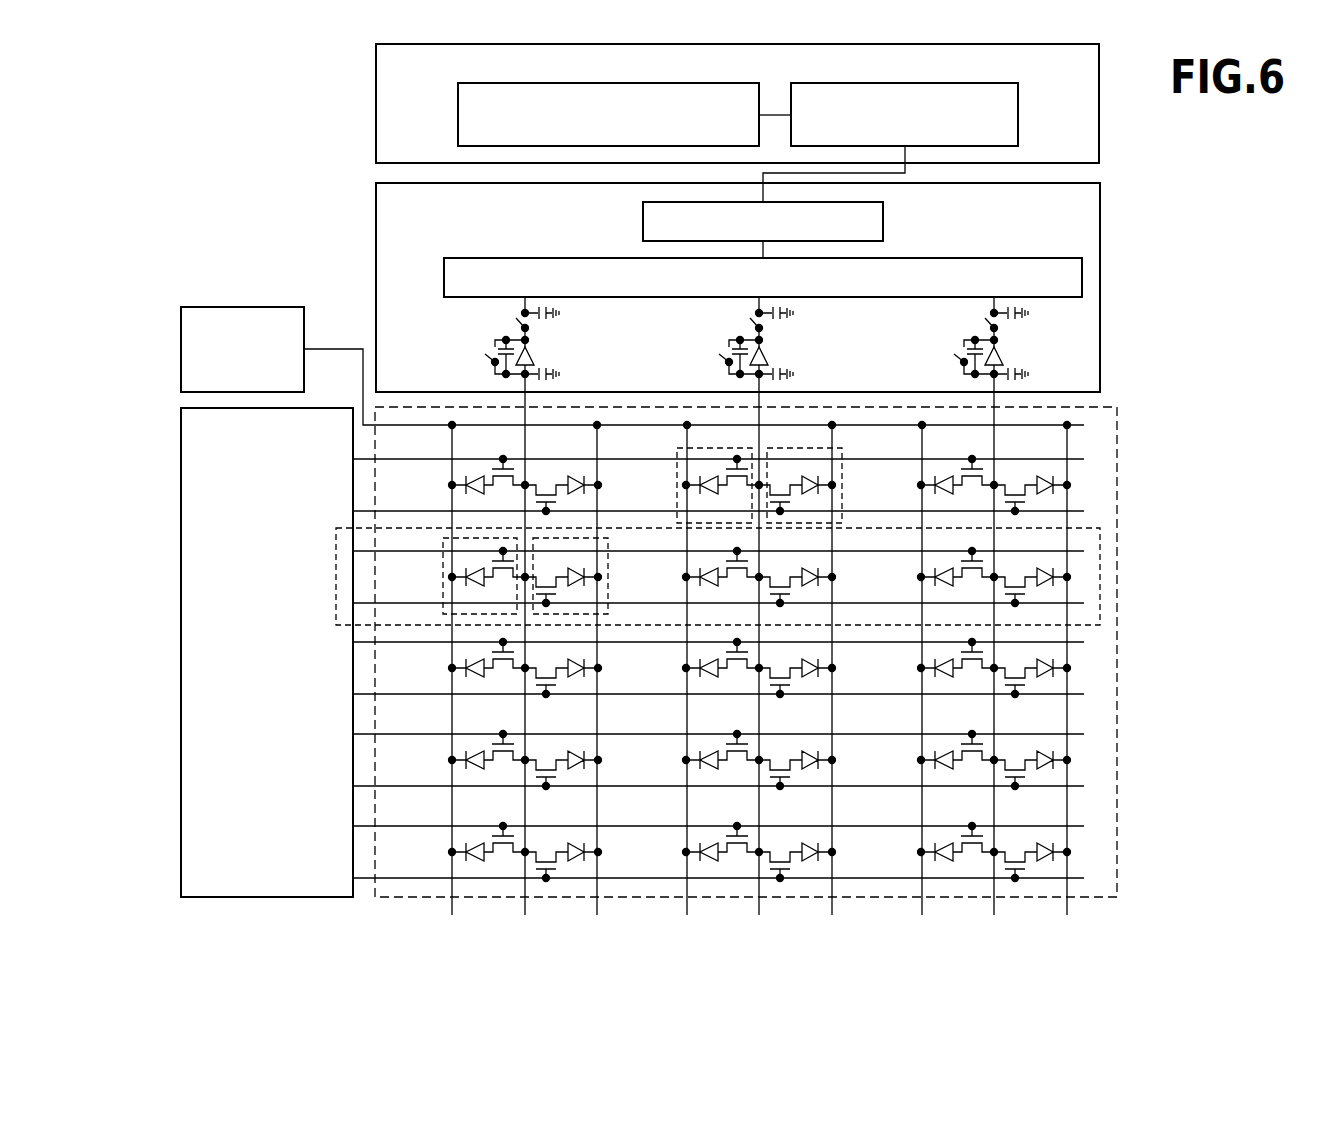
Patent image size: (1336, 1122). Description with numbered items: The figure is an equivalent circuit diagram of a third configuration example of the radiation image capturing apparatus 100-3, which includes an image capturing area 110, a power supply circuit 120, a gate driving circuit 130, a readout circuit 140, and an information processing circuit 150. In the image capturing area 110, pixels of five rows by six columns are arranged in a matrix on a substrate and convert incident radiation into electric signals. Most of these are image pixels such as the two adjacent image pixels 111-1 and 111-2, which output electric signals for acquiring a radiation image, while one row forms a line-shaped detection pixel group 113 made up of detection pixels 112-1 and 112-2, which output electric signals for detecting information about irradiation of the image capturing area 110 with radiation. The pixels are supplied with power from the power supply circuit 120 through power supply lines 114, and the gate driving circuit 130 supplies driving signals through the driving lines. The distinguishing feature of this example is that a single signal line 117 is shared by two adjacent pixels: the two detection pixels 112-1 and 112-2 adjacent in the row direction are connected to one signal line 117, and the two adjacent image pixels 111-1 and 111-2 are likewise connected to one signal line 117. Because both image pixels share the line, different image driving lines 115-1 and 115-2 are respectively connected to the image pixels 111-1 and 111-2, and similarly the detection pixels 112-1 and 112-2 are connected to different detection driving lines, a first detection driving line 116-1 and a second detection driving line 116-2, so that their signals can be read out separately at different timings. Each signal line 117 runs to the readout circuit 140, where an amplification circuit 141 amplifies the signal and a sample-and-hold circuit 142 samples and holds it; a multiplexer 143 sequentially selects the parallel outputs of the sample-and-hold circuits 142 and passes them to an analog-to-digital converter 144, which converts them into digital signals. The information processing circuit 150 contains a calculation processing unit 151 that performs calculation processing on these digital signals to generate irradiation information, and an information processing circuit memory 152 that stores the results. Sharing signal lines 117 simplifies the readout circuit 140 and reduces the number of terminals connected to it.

The radiation image capturing apparatus 100-3 is at (242, 112).
The image capturing area 110 is at (764, 678).
The image pixel 111-1 is at (677, 497).
The image pixel 111-2 is at (842, 497).
The detection pixel 112-1 is at (443, 594).
The detection pixel 112-2 is at (608, 594).
The line-shaped detection pixel group 113 is at (1100, 625).
The power supply line 114 is at (333, 349).
The image driving line 115-1 is at (1084, 459).
The image driving line 115-2 is at (1084, 511).
The first detection driving line 116-1 is at (1084, 551).
The second detection driving line 116-2 is at (1084, 603).
The signal line 117 is at (759, 905).
The power supply circuit 120 is at (243, 307).
The gate driving circuit 130 is at (265, 897).
The readout circuit 140 is at (376, 208).
The amplification circuit 141 is at (566, 340).
The sample-and-hold circuit 142 is at (566, 305).
The multiplexer 143 is at (1082, 277).
The analog-to-digital converter 144 is at (883, 220).
The information processing circuit 150 is at (376, 67).
The calculation processing unit 151 is at (1018, 115).
The information processing circuit memory 152 is at (458, 115).